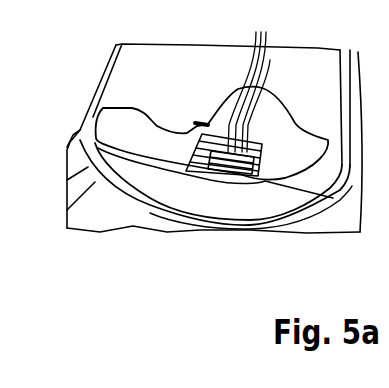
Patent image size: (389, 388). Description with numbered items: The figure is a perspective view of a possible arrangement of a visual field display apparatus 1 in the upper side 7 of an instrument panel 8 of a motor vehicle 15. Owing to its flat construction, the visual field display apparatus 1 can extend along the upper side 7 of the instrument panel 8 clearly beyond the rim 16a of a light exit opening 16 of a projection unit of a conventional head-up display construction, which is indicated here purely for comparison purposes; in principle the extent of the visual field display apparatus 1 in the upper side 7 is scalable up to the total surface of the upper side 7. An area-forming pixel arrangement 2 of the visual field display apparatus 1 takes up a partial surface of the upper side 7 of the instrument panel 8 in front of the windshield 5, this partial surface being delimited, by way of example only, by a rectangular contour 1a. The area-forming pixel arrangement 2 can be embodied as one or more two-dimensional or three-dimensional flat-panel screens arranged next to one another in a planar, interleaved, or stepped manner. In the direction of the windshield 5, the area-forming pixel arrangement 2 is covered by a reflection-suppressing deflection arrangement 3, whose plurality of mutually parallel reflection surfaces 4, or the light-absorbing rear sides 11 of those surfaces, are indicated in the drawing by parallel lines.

The visual field display apparatus 1 is at (216, 204).
The area-forming pixel arrangement 2 is at (180, 173).
The rectangular contour 1a is at (270, 173).
The reflection-suppressing deflection arrangement 3 is at (260, 80).
The reflection surfaces 4 is at (260, 80).
The light-absorbing rear sides 11 is at (260, 80).
The windshield 5 is at (163, 70).
The upper side 7 is at (152, 153).
The instrument panel 8 is at (175, 132).
The motor vehicle 15 is at (73, 135).
The light exit opening 16 is at (212, 173).
The rim 16a is at (250, 180).